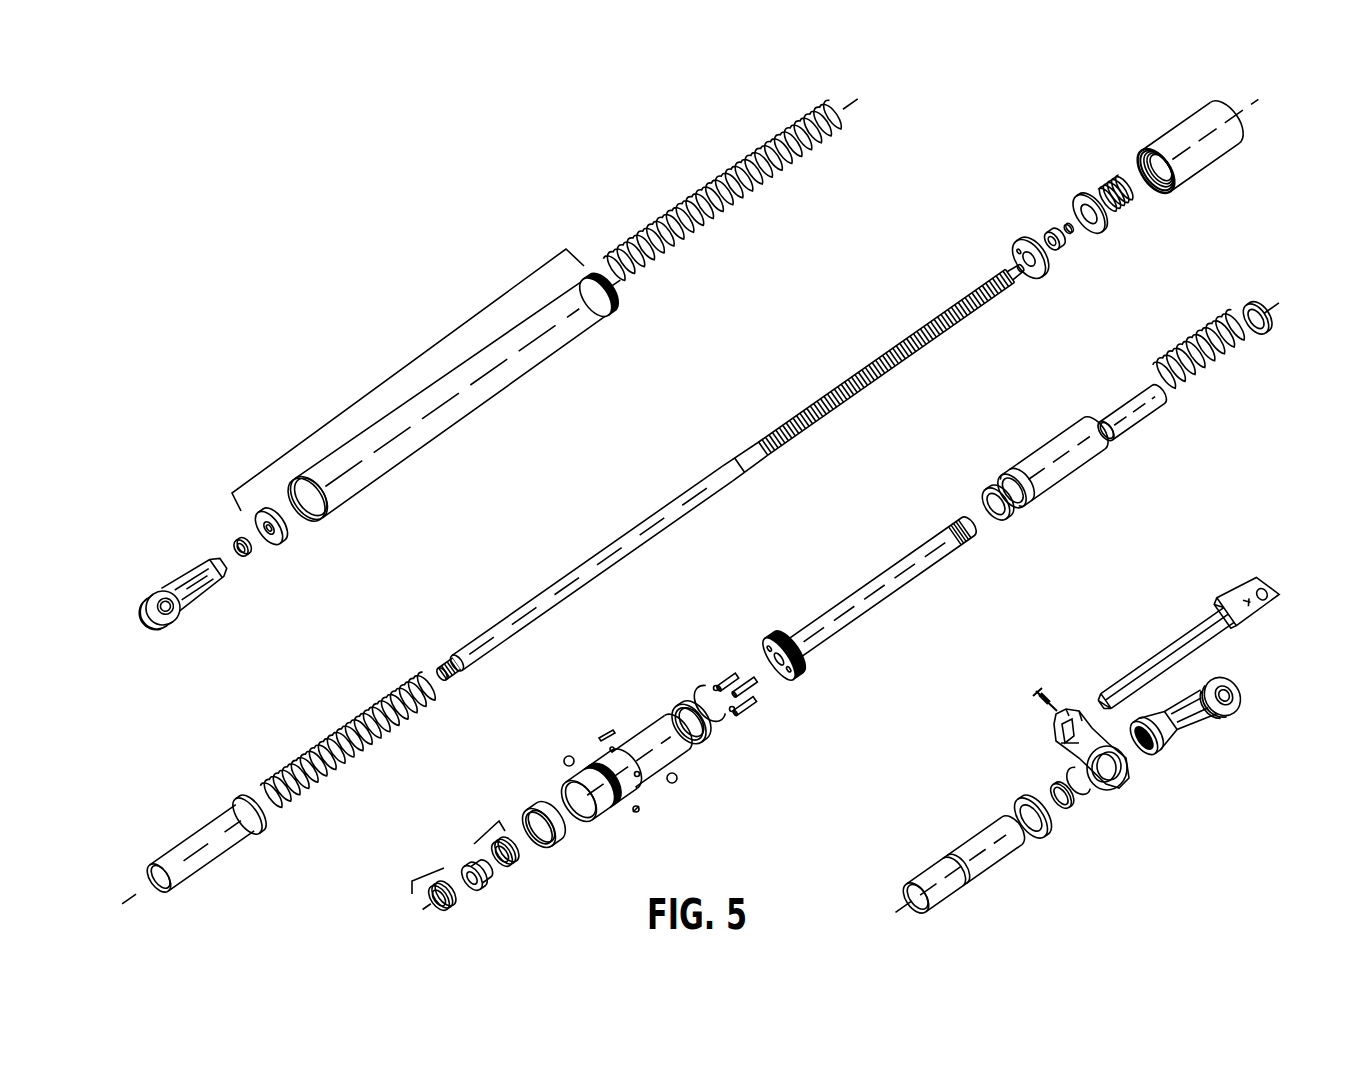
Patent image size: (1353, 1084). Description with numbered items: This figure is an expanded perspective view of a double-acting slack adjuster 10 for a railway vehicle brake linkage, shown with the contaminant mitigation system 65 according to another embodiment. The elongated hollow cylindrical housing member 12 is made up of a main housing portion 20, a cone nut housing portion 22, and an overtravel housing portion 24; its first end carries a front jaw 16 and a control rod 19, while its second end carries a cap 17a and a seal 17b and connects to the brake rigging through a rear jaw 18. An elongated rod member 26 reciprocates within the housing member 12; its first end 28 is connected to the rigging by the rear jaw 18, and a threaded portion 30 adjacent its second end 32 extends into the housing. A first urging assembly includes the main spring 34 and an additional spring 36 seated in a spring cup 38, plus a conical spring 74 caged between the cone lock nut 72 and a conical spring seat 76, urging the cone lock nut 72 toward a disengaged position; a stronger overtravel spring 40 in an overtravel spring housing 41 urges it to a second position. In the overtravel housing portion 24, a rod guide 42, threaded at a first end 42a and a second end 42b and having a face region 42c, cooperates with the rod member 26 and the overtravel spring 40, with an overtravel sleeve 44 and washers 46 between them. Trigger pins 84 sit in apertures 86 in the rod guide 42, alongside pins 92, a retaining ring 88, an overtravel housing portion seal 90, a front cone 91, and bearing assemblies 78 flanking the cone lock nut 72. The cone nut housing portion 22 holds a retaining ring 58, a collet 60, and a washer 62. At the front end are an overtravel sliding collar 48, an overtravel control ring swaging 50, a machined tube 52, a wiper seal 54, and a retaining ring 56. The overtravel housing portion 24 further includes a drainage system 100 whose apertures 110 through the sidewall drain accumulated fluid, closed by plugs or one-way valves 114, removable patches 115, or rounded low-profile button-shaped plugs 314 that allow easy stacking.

The slack adjuster 10 is at (195, 274).
The housing member 12 is at (542, 353).
The front jaw 16 is at (1197, 710).
The cap 17a is at (275, 545).
The seal 17b is at (238, 537).
The rear jaw 18 is at (195, 567).
The control rod 19 is at (1170, 643).
The main housing portion 20 is at (385, 373).
The cone nut housing portion 22 is at (1190, 118).
The overtravel housing portion 24 is at (611, 749).
The rod member 26 is at (572, 572).
The first end of rod member 28 is at (455, 663).
The threaded portion 30 is at (857, 370).
The second end of rod member 32 is at (960, 293).
The main spring 34 is at (697, 193).
The additional spring 36 is at (352, 725).
The spring cup 38 is at (212, 826).
The overtravel spring 40 is at (1192, 340).
The overtravel spring housing 41 is at (1040, 453).
The rod guide 42 is at (875, 580).
The first end of rod guide 42a is at (788, 685).
The second end of rod guide 42b is at (953, 517).
The flange bore 42c is at (780, 637).
The overtravel sleeve 44 is at (1128, 400).
The washers 46 is at (985, 497).
The overtravel sliding collar 48 is at (1077, 712).
The overtravel control ring swaging 50 is at (1013, 808).
The machined tube 52 is at (933, 873).
The wiper seal 54 is at (1073, 807).
The retaining ring 56 is at (1087, 792).
The retaining ring 58 is at (1067, 226).
The collet 60 is at (1051, 237).
The washer 62 is at (1013, 252).
The contaminant mitigation system 65 is at (713, 585).
The cone lock nut 72 is at (465, 860).
The conical spring 74 is at (1110, 187).
The conical spring seat 76 is at (1077, 207).
The bearing assemblies 78 is at (430, 867).
The trigger pins 84 is at (728, 676).
The apertures 86 is at (767, 650).
The retaining ring 88 is at (697, 693).
The overtravel housing portion seal 90 is at (683, 717).
The front cone 91 is at (532, 807).
The set screw 92 is at (717, 685).
The drainage system 100 is at (644, 720).
The apertures 110 is at (642, 775).
The plugs or one-way valves 114 is at (635, 810).
The patches 115 is at (605, 728).
The button-shaped plug 314 is at (562, 750).